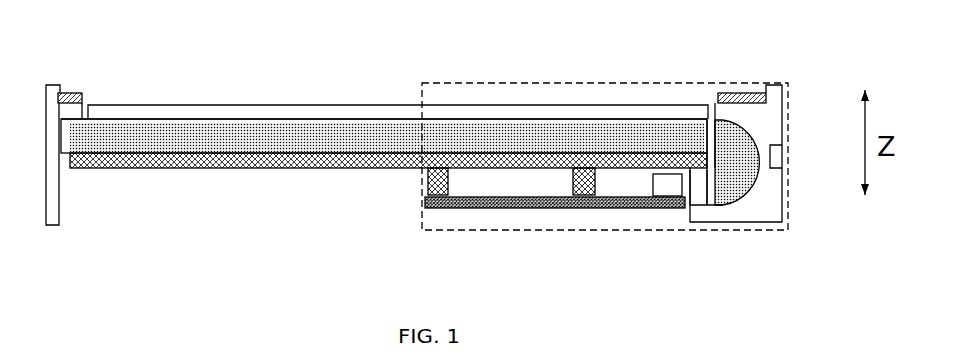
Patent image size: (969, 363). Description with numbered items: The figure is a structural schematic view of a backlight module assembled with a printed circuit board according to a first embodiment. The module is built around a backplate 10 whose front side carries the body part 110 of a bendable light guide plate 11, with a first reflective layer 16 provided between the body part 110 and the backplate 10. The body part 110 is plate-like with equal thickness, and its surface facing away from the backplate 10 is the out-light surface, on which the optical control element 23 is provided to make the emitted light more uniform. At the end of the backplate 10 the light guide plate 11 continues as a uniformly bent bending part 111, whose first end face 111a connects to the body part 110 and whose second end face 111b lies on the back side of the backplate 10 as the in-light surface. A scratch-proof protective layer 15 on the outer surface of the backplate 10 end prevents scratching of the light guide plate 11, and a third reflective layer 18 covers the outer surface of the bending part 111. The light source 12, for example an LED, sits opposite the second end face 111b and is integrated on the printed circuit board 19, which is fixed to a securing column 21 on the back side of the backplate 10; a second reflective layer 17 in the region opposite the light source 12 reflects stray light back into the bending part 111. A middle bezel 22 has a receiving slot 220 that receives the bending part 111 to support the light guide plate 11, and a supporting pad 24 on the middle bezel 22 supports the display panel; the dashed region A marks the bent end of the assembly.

The backplate 10 is at (297, 169).
The light guide plate 11 is at (220, 117).
The body part 110 is at (323, 121).
The bending part 111 is at (708, 206).
The first end face 111a is at (686, 157).
The second end face 111b is at (687, 206).
The light source 12 is at (668, 187).
The scratch-proof protective layer 15 is at (675, 140).
The first reflective layer 16 is at (263, 150).
The second reflective layer 17 is at (610, 178).
The third reflective layer 18 is at (745, 127).
The printed circuit board 19 is at (518, 204).
The securing column 21 is at (427, 182).
The middle bezel 22 is at (62, 213).
The optical control element 23 is at (153, 101).
The supporting pad 24 is at (70, 88).
The receiving slot 220 is at (750, 187).
The region A is at (504, 81).